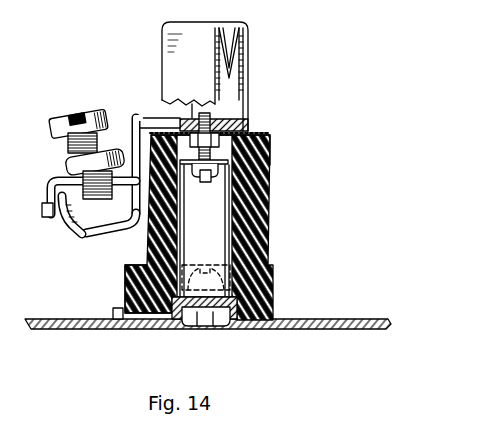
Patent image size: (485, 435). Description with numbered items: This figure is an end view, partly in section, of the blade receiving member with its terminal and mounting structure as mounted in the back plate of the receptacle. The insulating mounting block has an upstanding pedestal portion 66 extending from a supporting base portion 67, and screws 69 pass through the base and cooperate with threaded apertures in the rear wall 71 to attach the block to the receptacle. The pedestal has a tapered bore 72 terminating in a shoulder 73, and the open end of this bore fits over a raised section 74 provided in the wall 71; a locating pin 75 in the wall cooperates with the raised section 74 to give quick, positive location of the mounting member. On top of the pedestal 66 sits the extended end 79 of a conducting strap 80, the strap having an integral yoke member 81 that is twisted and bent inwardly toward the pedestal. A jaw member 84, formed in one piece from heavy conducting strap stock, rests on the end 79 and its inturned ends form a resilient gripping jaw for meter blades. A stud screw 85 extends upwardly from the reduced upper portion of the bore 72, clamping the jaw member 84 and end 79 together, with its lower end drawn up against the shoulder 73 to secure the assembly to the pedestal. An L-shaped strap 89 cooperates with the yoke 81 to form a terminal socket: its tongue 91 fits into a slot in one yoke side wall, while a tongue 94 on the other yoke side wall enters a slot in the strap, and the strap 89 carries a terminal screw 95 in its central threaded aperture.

The pedestal portion 66 is at (268, 187).
The base portion 67 is at (127, 283).
The screws 69 is at (272, 262).
The rear wall 71 is at (352, 319).
The tapered bore 72 is at (227, 223).
The shoulder 73 is at (268, 146).
The raised section 74 is at (183, 326).
The locating pin 75 is at (113, 312).
The extended end 79 is at (231, 119).
The conducting strap 80 is at (158, 110).
The yoke member 81 is at (90, 232).
The jaw member 84 is at (249, 52).
The stud screw 85 is at (248, 132).
The L-shaped strap 89 is at (50, 178).
The tongue 91 is at (133, 122).
The tongue 94 is at (45, 208).
The terminal screw 95 is at (72, 113).